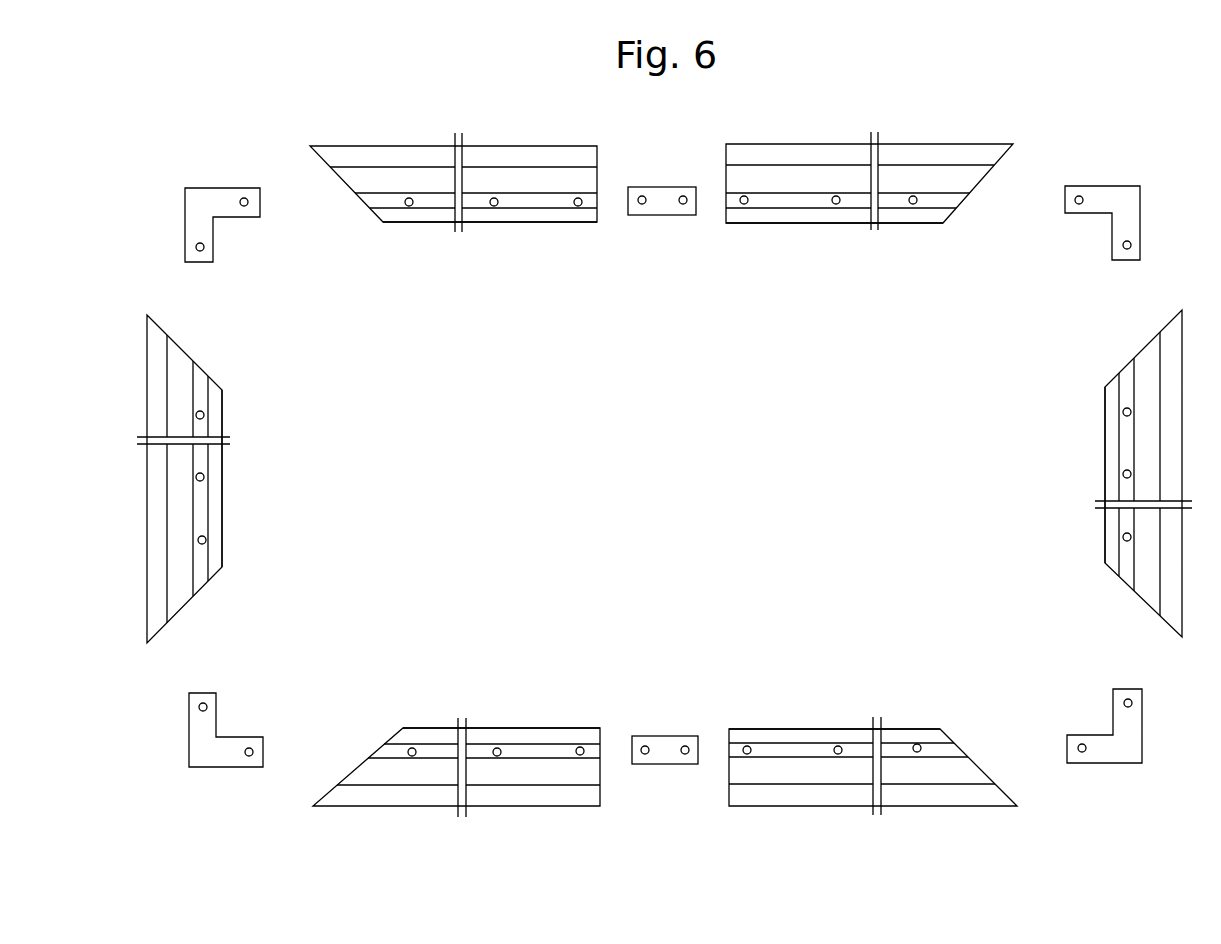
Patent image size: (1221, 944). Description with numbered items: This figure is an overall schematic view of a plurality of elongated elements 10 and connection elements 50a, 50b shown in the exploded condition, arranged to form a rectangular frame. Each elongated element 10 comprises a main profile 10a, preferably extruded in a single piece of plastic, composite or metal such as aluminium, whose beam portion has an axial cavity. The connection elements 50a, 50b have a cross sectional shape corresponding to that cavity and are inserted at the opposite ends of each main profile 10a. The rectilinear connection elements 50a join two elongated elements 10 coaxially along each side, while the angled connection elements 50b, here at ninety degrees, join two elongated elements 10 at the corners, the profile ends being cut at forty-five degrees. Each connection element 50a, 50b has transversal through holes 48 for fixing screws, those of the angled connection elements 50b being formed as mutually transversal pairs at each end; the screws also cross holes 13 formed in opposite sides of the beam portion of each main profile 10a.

The elongated element 10 is at (338, 128).
The main profile 10a is at (490, 215).
The holes 13 is at (409, 206).
The transversal through holes 48 is at (244, 198).
The rectilinear connection element 50a is at (660, 207).
The angled connection element 50b is at (217, 207).